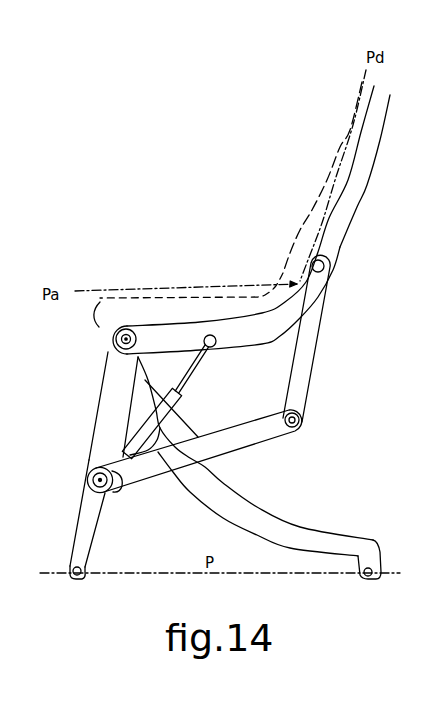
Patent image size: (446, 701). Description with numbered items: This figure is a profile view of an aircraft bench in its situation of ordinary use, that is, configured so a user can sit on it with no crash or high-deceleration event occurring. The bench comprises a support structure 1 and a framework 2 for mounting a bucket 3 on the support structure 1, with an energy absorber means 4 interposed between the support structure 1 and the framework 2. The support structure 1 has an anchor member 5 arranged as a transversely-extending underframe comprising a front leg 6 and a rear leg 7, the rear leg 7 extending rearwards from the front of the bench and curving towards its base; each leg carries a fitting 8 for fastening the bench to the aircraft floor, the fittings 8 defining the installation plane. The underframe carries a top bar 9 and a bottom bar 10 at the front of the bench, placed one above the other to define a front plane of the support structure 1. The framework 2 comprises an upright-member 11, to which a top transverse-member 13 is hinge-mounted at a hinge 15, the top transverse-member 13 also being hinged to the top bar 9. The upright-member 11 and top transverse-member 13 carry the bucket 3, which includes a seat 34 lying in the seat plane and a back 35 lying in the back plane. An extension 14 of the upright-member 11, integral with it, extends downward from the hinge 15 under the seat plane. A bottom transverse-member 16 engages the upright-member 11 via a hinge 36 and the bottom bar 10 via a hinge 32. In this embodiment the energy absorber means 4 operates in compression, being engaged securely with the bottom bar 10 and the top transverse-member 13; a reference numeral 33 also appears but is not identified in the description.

The support structure 1 is at (80, 423).
The framework 2 is at (350, 396).
The bucket 3 is at (281, 168).
The energy absorber means 4 is at (173, 407).
The anchor member 5 is at (345, 503).
The front leg 6 is at (75, 543).
The rear leg 7 is at (299, 522).
The fitting 8 is at (85, 568).
The top bar 9 is at (140, 340).
The bottom bar 10 is at (118, 482).
The upright-member 11 is at (369, 177).
The top transverse-member 13 is at (268, 346).
The extension 14 is at (311, 364).
The hinge 15 is at (332, 249).
The bottom transverse-member 16 is at (253, 441).
The hinge 32 is at (88, 474).
The seat front end 33 is at (115, 325).
The seat 34 is at (235, 300).
The back 35 is at (349, 128).
The hinge 36 is at (298, 428).